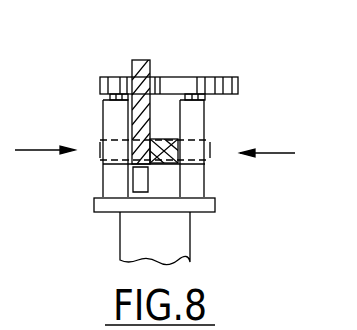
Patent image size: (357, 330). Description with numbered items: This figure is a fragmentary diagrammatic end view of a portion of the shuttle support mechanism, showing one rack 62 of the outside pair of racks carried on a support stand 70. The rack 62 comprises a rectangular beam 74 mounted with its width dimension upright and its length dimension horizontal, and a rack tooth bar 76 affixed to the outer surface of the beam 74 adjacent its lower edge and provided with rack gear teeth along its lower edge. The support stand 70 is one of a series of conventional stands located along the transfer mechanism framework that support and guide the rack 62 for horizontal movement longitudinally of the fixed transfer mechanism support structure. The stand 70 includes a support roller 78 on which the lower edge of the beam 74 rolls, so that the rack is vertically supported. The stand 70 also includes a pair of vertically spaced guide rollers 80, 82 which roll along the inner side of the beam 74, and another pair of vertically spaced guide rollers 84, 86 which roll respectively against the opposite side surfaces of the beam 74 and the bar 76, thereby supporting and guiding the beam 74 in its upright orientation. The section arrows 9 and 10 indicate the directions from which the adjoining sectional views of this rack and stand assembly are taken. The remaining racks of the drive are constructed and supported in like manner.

The section line 9- 9 is at (43, 148).
The section line 10- 10 is at (268, 152).
The rack 62 is at (152, 63).
The support stand 70 is at (108, 222).
The rectangular beam 74 is at (133, 62).
The rack tooth bar 76 is at (164, 142).
The support roller 78 is at (133, 181).
The guide roller 80 is at (100, 82).
The guide roller 82 is at (100, 147).
The guide roller 84 is at (238, 87).
The guide roller 86 is at (208, 158).